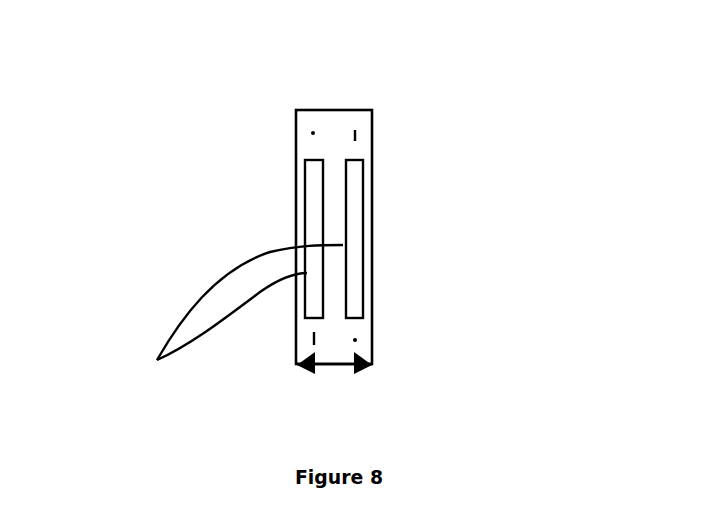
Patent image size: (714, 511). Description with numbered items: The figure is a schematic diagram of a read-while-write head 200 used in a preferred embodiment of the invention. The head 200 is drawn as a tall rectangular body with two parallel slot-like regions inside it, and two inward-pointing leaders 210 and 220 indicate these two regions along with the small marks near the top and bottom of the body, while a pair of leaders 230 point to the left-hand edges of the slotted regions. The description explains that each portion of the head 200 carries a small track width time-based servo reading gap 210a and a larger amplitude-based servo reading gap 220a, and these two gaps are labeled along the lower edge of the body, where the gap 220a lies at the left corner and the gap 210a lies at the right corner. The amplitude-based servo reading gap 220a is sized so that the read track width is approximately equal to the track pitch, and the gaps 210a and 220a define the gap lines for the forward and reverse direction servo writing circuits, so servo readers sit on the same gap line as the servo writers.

The read-while-write head 200 is at (302, 110).
The first substrate / electrode 210 is at (340, 107).
The second electrode 220 is at (330, 141).
The electrical connections / leads 230 is at (157, 360).
The amplitude-based servo reading gap 220a is at (303, 372).
The small track width time-based servo reading gap 210a is at (367, 372).